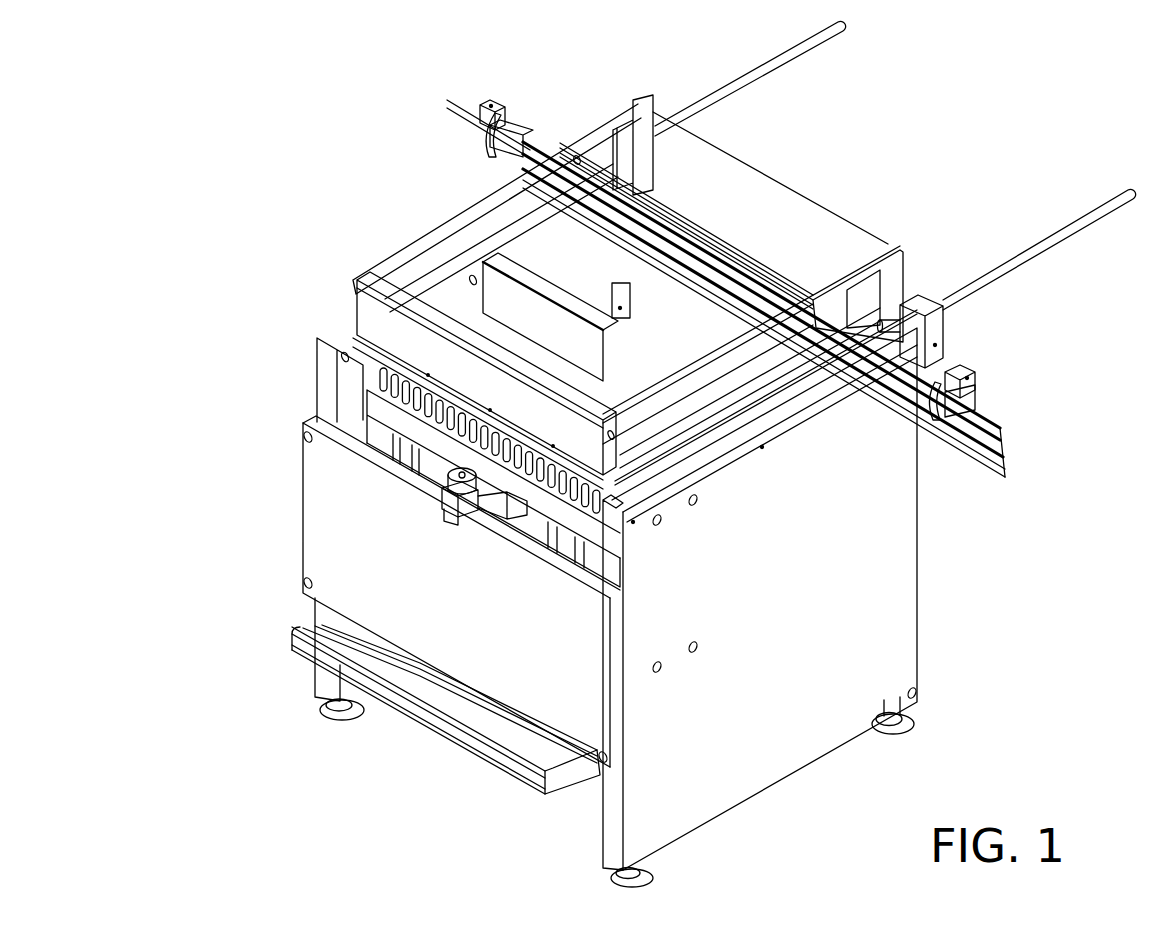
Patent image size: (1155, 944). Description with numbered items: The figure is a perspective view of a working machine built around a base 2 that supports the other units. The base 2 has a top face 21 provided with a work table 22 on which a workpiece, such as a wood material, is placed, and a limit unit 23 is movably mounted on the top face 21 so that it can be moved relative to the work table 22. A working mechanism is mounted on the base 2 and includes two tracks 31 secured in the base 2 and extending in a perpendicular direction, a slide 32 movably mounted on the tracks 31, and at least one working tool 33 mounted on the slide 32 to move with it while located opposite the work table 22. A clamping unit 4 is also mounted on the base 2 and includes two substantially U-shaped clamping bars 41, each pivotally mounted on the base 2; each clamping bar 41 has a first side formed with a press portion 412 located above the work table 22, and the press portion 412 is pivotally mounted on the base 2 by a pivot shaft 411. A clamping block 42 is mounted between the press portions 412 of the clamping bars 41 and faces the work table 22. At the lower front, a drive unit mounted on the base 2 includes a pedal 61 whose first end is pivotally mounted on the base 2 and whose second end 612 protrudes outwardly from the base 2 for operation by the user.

The base 2 is at (922, 599).
The top face 21 is at (780, 420).
The work table 22 is at (358, 367).
The limit unit 23 is at (747, 251).
The tracks 31 is at (388, 457).
The slide 32 is at (387, 418).
The working tool 33 is at (382, 378).
The clamping unit 4 is at (418, 226).
The clamping bars 41 is at (650, 100).
The pivot shaft 411 is at (577, 155).
The press portion 412 is at (503, 197).
The clamping block 42 is at (365, 312).
The pedal 61 is at (567, 787).
The second end 612 is at (527, 787).